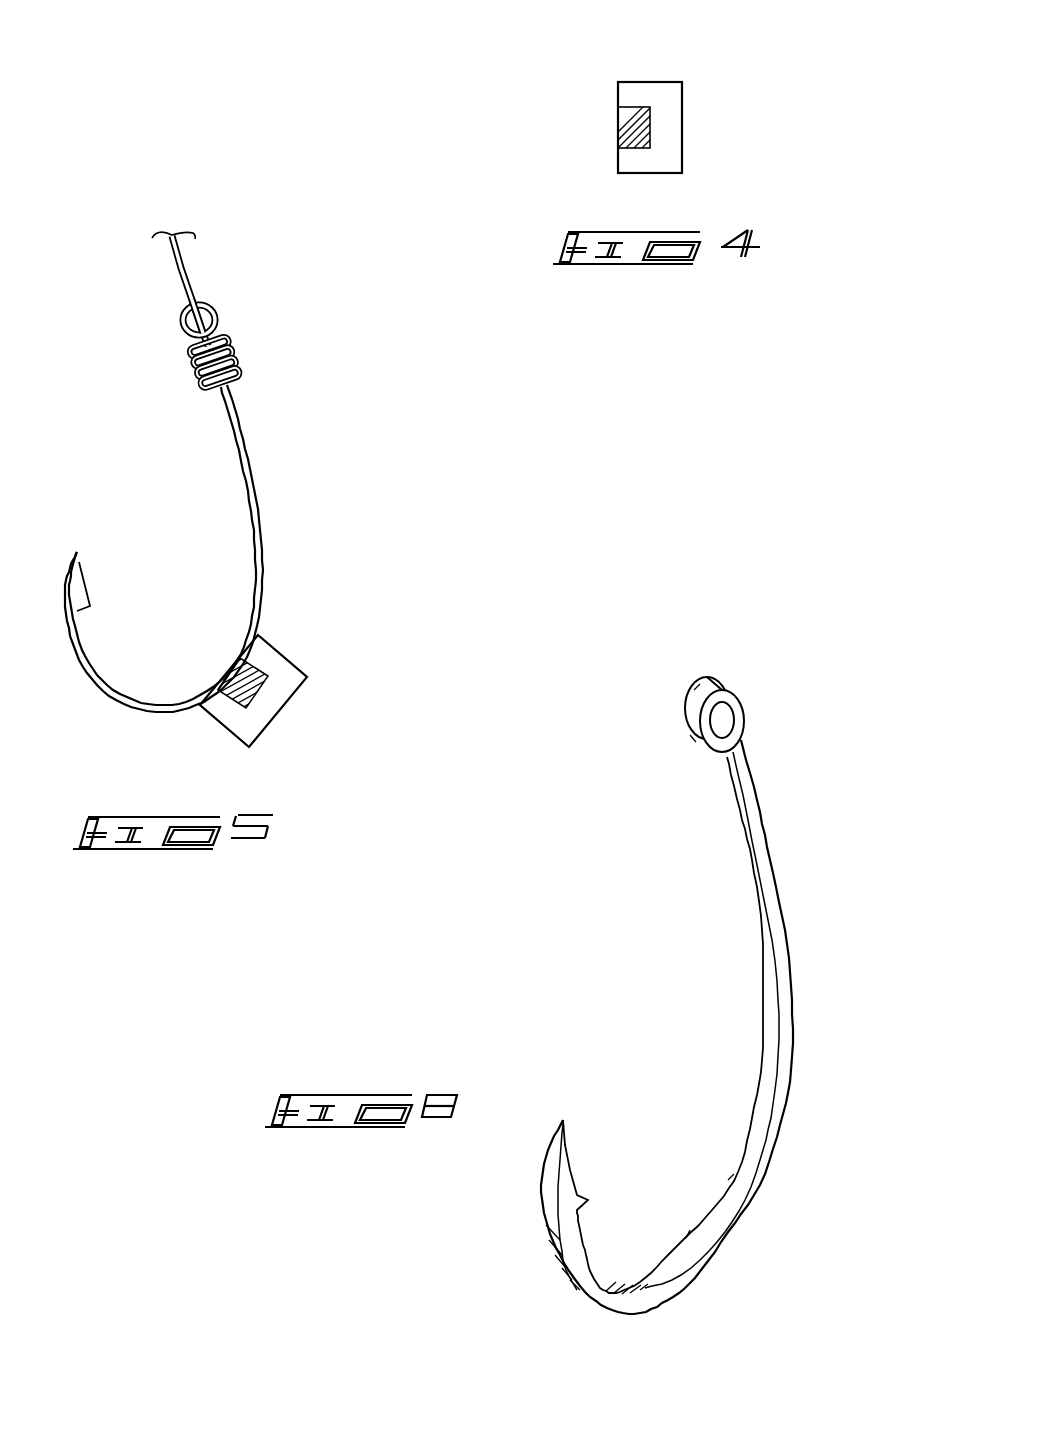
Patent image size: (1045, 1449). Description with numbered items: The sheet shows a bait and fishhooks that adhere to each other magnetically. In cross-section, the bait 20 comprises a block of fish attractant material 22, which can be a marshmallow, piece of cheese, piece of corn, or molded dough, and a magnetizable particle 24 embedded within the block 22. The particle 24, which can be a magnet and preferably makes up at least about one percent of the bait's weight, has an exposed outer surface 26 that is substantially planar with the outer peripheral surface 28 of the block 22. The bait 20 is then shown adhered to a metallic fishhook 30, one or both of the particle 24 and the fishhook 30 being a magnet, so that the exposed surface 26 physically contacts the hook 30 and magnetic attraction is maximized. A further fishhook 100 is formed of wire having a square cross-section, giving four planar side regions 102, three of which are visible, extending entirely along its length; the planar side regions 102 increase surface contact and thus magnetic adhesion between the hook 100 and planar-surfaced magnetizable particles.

In FIG. 4, the bait 20 is at (671, 103).
In FIG. 5, the bait 20 is at (288, 668).
In FIG. 4, the block of fish attractant material 22 is at (667, 132).
In FIG. 5, the block of fish attractant material 22 is at (253, 691).
In FIG. 4, the magnetizable particle 24 is at (630, 123).
In FIG. 5, the magnetizable particle 24 is at (242, 685).
In FIG. 4, the exposed outer surface 26 is at (610, 138).
In FIG. 5, the exposed outer surface 26 is at (218, 660).
In FIG. 4, the outer peripheral surface 28 is at (608, 90).
In FIG. 5, the metallic fishhook 30 is at (285, 460).
In FIG. 6, the fishhook 100 is at (649, 995).
In FIG. 6, the planar side regions 102 is at (735, 840).